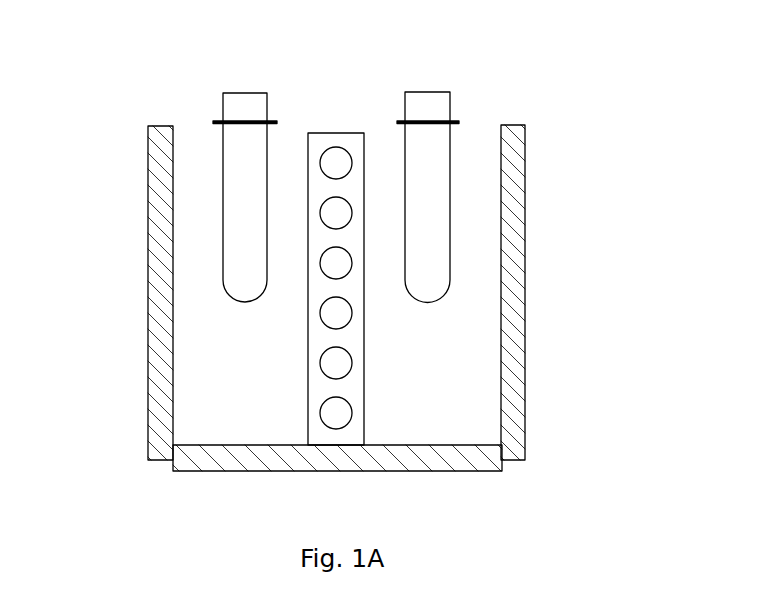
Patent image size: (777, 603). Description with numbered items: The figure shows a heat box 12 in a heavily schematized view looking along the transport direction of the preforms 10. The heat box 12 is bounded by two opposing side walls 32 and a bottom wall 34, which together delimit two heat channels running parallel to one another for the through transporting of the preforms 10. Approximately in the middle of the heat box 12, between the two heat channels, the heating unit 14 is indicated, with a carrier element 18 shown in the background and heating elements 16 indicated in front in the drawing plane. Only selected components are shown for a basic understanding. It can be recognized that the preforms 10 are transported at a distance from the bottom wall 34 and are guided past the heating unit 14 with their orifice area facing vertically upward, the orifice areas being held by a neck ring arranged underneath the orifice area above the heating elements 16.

The preforms 10 is at (230, 158).
The heat box 12 is at (381, 351).
The heating unit 14 is at (288, 340).
The heating elements 16 is at (360, 242).
The carrier element 18 is at (342, 163).
The side walls 32 is at (147, 215).
The bottom wall 34 is at (217, 473).